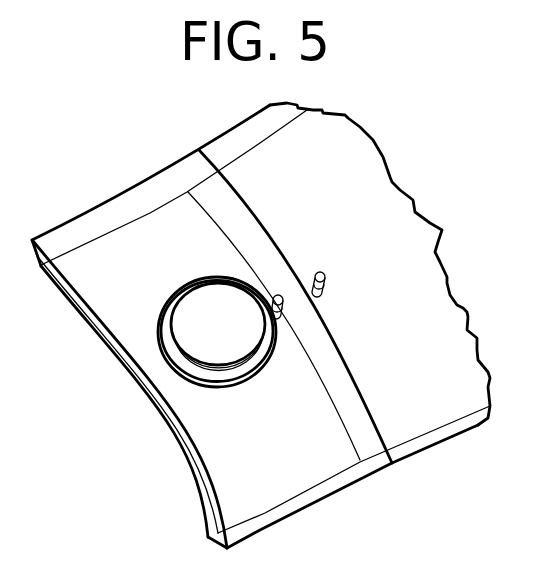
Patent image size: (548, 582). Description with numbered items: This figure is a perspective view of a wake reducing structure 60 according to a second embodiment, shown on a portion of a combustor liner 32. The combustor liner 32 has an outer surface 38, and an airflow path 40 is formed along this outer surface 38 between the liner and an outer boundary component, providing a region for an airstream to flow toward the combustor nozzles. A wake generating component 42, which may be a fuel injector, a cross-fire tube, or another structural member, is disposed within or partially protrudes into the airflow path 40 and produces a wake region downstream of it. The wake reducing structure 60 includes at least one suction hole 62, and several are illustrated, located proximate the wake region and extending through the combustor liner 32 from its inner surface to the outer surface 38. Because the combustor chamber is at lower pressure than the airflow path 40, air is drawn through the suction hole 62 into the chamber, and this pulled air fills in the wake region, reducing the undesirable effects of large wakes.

The combustor liner 32 is at (118, 193).
The outer surface 38 is at (422, 256).
The airflow path 40 is at (160, 378).
The wake generating component 42 is at (146, 330).
The wake reducing structure 60 is at (303, 280).
The suction hole 62 is at (285, 311).